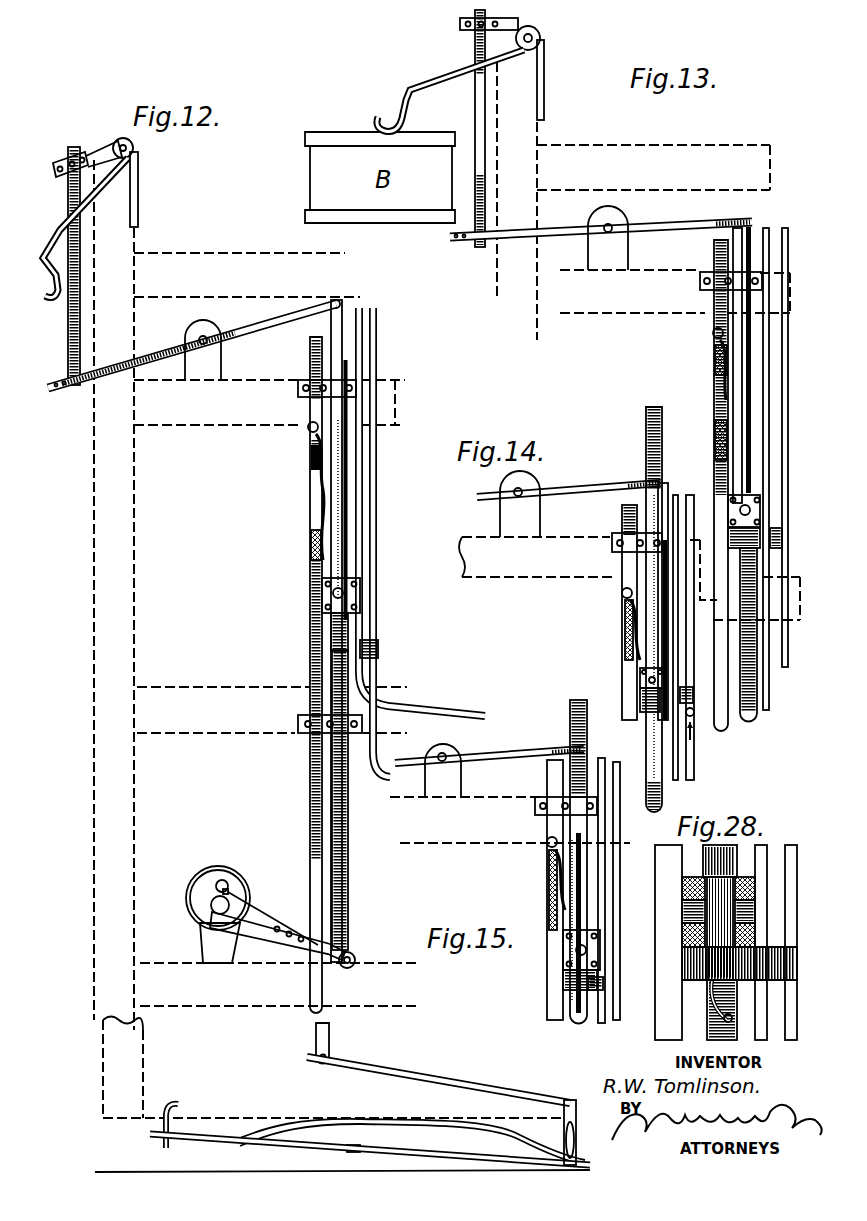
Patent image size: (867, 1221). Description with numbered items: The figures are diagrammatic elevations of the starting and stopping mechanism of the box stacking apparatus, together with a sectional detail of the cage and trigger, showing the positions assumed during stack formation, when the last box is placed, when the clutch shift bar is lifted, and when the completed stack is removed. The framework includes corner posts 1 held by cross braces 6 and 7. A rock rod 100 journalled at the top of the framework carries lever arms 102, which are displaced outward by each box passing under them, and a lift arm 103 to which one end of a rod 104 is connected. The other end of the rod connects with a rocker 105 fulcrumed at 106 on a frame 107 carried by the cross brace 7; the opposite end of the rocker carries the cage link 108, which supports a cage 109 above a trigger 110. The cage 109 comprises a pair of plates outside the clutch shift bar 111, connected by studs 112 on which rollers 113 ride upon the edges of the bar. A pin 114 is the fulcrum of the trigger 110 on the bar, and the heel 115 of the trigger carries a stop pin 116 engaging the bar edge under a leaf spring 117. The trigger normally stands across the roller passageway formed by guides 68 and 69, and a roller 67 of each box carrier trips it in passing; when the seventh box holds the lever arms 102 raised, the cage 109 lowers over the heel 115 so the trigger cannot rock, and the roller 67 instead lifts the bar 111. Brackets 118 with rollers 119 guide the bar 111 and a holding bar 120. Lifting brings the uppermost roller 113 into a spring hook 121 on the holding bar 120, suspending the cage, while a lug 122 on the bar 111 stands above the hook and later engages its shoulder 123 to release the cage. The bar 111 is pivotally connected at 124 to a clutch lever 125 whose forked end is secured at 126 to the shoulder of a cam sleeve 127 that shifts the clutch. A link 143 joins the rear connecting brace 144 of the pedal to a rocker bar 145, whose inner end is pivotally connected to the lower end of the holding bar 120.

In FIG. 12, the corner posts 1 is at (163, 597).
In FIG. 12, the cross brace 6 is at (227, 680).
In FIG. 12, the cross brace 7 is at (244, 420).
In FIG. 13, the cross brace 7 is at (645, 315).
In FIG. 14, the cross brace 7 is at (530, 573).
In FIG. 14, the roller 67 is at (692, 716).
In FIG. 12, the guide 68 is at (362, 462).
In FIG. 13, the guide 68 is at (783, 390).
In FIG. 14, the guide 68 is at (675, 637).
In FIG. 15, the guide 68 is at (601, 890).
In FIG. 28, the guide 68 is at (792, 860).
In FIG. 12, the guide 69 is at (376, 490).
In FIG. 13, the guide 69 is at (767, 416).
In FIG. 14, the guide 69 is at (690, 637).
In FIG. 15, the guide 69 is at (616, 891).
In FIG. 28, the guide 69 is at (767, 870).
In FIG. 12, the rock rod 100 is at (133, 148).
In FIG. 13, the rock rod 100 is at (541, 38).
In FIG. 12, the lever arms 102 is at (65, 228).
In FIG. 13, the lever arms 102 is at (418, 86).
In FIG. 12, the lift arm 103 is at (98, 140).
In FIG. 13, the lift arm 103 is at (512, 32).
In FIG. 12, the rod 104 is at (68, 192).
In FIG. 13, the rod 104 is at (474, 42).
In FIG. 12, the rocker 105 is at (153, 347).
In FIG. 13, the rocker 105 is at (563, 226).
In FIG. 14, the rocker 105 is at (594, 487).
In FIG. 15, the rocker 105 is at (478, 760).
In FIG. 12, the fulcrum 106 is at (208, 338).
In FIG. 13, the fulcrum 106 is at (614, 227).
In FIG. 14, the fulcrum 106 is at (527, 489).
In FIG. 15, the fulcrum 106 is at (440, 757).
In FIG. 12, the frame 107 is at (222, 370).
In FIG. 13, the frame 107 is at (632, 262).
In FIG. 14, the frame 107 is at (538, 518).
In FIG. 15, the frame 107 is at (427, 787).
In FIG. 12, the cage link 108 is at (342, 355).
In FIG. 13, the cage link 108 is at (743, 240).
In FIG. 14, the cage link 108 is at (657, 502).
In FIG. 15, the cage link 108 is at (570, 762).
In FIG. 12, the cage 109 is at (357, 594).
In FIG. 13, the cage 109 is at (758, 513).
In FIG. 14, the cage 109 is at (641, 677).
In FIG. 15, the cage 109 is at (598, 947).
In FIG. 28, the cage 109 is at (682, 938).
In FIG. 12, the trigger 110 is at (370, 650).
In FIG. 13, the trigger 110 is at (780, 540).
In FIG. 14, the trigger 110 is at (693, 697).
In FIG. 15, the trigger 110 is at (605, 980).
In FIG. 28, the trigger 110 is at (780, 963).
In FIG. 12, the clutch shift bar 111 is at (352, 508).
In FIG. 13, the clutch shift bar 111 is at (748, 683).
In FIG. 14, the clutch shift bar 111 is at (650, 430).
In FIG. 15, the clutch shift bar 111 is at (577, 1022).
In FIG. 28, the clutch shift bar 111 is at (737, 1000).
In FIG. 12, the studs 112 is at (327, 593).
In FIG. 15, the studs 112 is at (603, 963).
In FIG. 28, the studs 112 is at (680, 897).
In FIG. 12, the rollers 113 is at (317, 612).
In FIG. 14, the rollers 113 is at (643, 650).
In FIG. 15, the rollers 113 is at (568, 948).
In FIG. 28, the rollers 113 is at (682, 878).
In FIG. 12, the pin 114 is at (347, 640).
In FIG. 13, the pin 114 is at (762, 550).
In FIG. 15, the pin 114 is at (580, 980).
In FIG. 28, the pin 114 is at (710, 965).
In FIG. 28, the heel 115 is at (683, 907).
In FIG. 12, the stop pin 116 is at (333, 617).
In FIG. 28, the leaf spring 117 is at (707, 1003).
In FIG. 12, the brackets 118 is at (340, 390).
In FIG. 13, the brackets 118 is at (745, 278).
In FIG. 14, the brackets 118 is at (630, 542).
In FIG. 15, the brackets 118 is at (550, 812).
In FIG. 12, the rollers 119 is at (373, 393).
In FIG. 13, the rollers 119 is at (779, 305).
In FIG. 14, the rollers 119 is at (605, 550).
In FIG. 15, the rollers 119 is at (537, 804).
In FIG. 12, the holding bar 120 is at (320, 553).
In FIG. 13, the holding bar 120 is at (725, 440).
In FIG. 14, the holding bar 120 is at (633, 700).
In FIG. 15, the holding bar 120 is at (555, 983).
In FIG. 12, the spring hook 121 is at (317, 497).
In FIG. 13, the spring hook 121 is at (714, 397).
In FIG. 14, the spring hook 121 is at (630, 655).
In FIG. 15, the spring hook 121 is at (547, 927).
In FIG. 12, the lug 122 is at (327, 582).
In FIG. 13, the lug 122 is at (727, 462).
In FIG. 14, the lug 122 is at (623, 593).
In FIG. 15, the lug 122 is at (548, 843).
In FIG. 12, the shoulder 123 is at (310, 437).
In FIG. 13, the shoulder 123 is at (710, 343).
In FIG. 14, the shoulder 123 is at (628, 610).
In FIG. 15, the shoulder 123 is at (543, 870).
In FIG. 12, the pivotal connection 124 is at (353, 956).
In FIG. 12, the clutch lever 125 is at (277, 927).
In FIG. 12, the securing point 126 is at (228, 892).
In FIG. 12, the cam sleeve 127 is at (205, 892).
In FIG. 12, the link 143 is at (557, 1135).
In FIG. 12, the rear connecting brace 144 is at (582, 1163).
In FIG. 12, the rocker bar 145 is at (457, 1068).